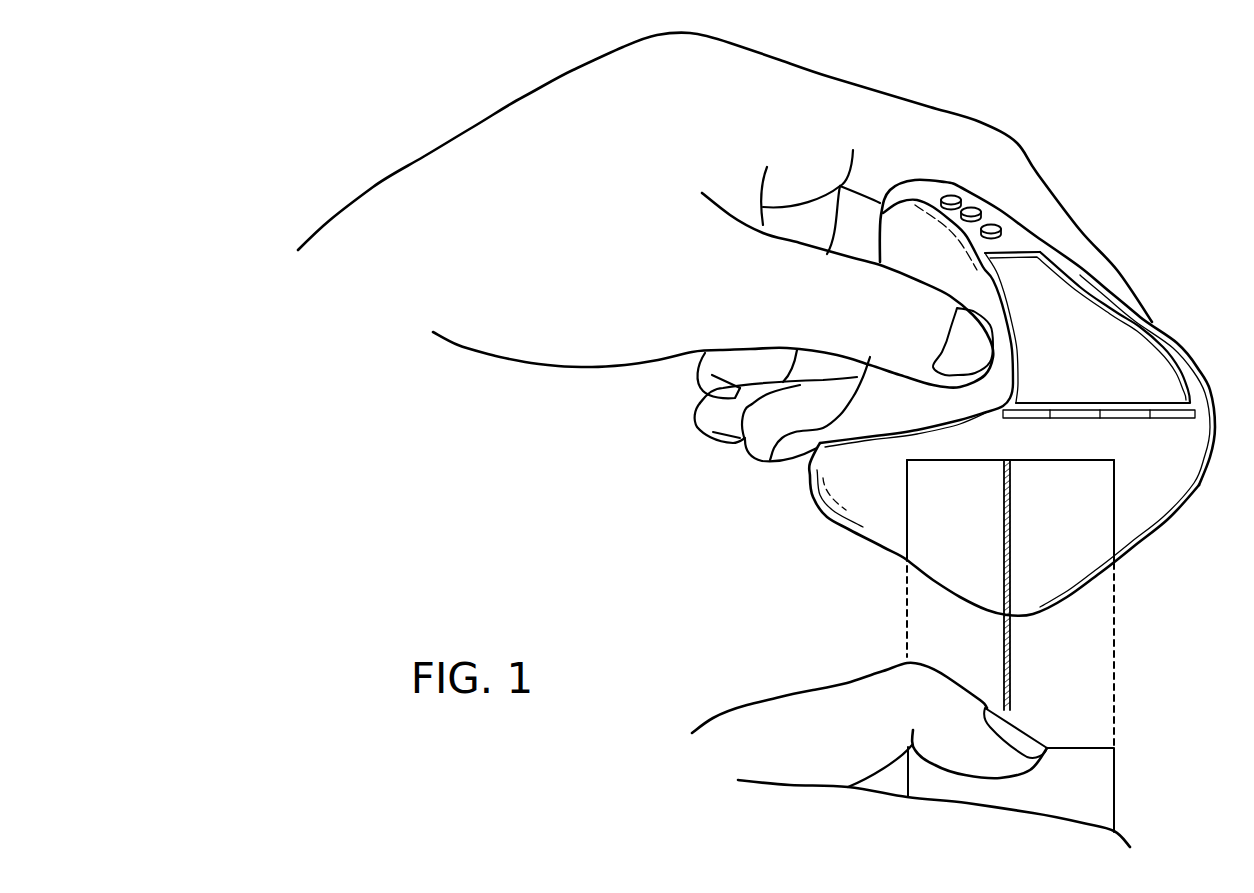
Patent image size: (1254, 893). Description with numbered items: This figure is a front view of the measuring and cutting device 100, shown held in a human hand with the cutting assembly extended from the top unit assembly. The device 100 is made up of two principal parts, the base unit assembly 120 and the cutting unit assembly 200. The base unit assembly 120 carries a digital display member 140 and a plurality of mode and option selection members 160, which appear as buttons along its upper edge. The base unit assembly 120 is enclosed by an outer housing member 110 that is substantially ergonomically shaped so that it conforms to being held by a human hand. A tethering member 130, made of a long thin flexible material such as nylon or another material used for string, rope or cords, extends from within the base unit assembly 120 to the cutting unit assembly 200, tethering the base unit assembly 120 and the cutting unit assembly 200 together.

The measuring and cutting device 100 is at (1060, 253).
The outer housing member 110 is at (1180, 347).
The base unit assembly 120 is at (1145, 495).
The tethering member 130 is at (1013, 650).
The digital display member 140 is at (1073, 318).
The mode and option selection members 160 is at (951, 196).
The cutting unit assembly 200 is at (1090, 790).